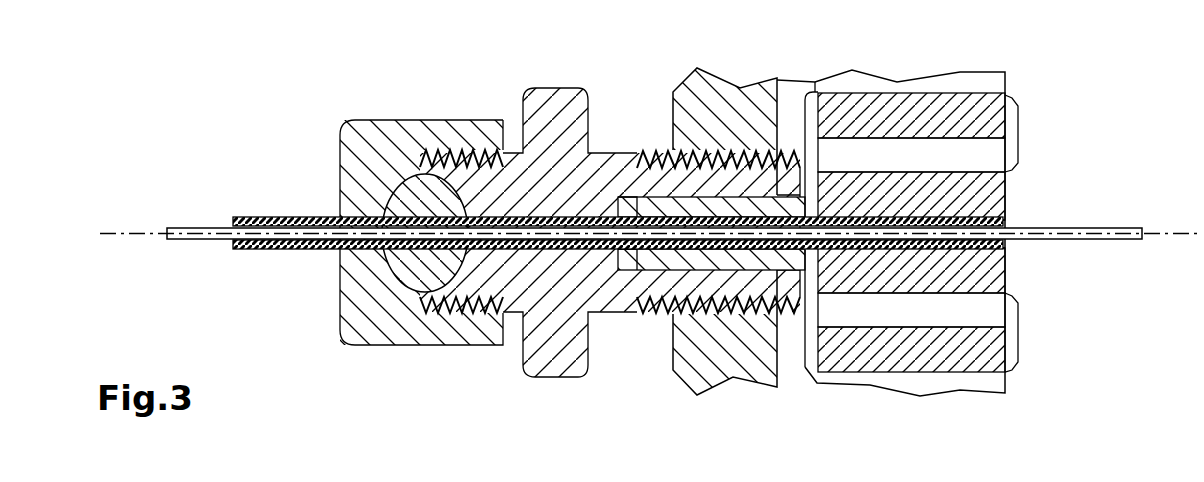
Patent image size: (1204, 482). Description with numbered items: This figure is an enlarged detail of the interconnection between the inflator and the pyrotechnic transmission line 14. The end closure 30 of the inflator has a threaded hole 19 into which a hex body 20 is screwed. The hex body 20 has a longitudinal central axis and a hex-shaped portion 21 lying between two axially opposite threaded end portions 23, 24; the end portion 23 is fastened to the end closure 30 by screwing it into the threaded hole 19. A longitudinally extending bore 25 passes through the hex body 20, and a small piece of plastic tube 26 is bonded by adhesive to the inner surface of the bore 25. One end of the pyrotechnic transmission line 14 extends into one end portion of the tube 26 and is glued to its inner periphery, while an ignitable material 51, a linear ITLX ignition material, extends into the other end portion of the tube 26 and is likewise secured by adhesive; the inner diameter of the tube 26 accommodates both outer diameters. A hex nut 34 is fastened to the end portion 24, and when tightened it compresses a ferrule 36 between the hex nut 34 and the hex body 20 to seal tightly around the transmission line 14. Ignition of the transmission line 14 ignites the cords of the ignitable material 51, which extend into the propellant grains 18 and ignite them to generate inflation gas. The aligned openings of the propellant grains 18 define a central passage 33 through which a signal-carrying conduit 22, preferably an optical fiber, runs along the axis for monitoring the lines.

The pyrotechnic transmission line 14 is at (281, 251).
The propellant grains 18 is at (893, 115).
The threaded hole 19 is at (697, 300).
The hex body 20 is at (555, 386).
The hex-shaped portion 21 is at (557, 88).
The conduit 22 is at (183, 241).
The end portion 23 is at (785, 286).
The end portion 24 is at (440, 303).
The bore 25 is at (646, 266).
The tube 26 is at (733, 262).
The end closure 30 is at (722, 118).
The central passage 33 is at (922, 236).
The hex nut 34 is at (353, 118).
The ferrule 36 is at (410, 282).
The ignitable material 51 is at (983, 218).